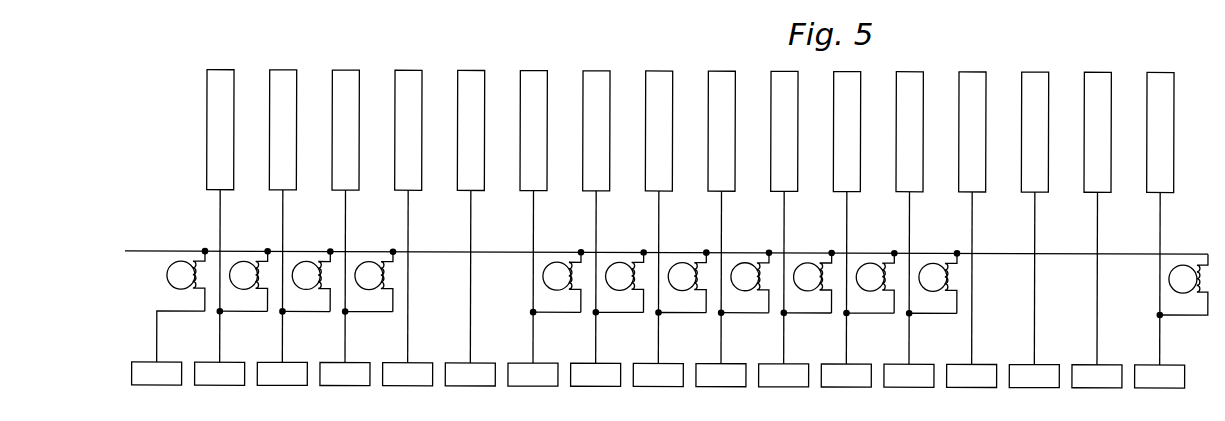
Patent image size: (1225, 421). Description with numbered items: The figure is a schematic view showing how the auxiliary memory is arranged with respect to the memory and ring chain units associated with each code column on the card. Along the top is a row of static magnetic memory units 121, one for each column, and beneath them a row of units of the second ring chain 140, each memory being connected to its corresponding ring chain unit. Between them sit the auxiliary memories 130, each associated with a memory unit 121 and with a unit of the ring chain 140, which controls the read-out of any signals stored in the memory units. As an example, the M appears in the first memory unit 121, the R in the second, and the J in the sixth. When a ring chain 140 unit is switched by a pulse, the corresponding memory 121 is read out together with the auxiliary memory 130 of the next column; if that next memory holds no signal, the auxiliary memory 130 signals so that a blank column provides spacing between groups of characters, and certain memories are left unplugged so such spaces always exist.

The static magnetic memory unit 121 is at (690, 208).
The auxiliary memory means 130 is at (666, 297).
The second ring chain 140 is at (294, 392).